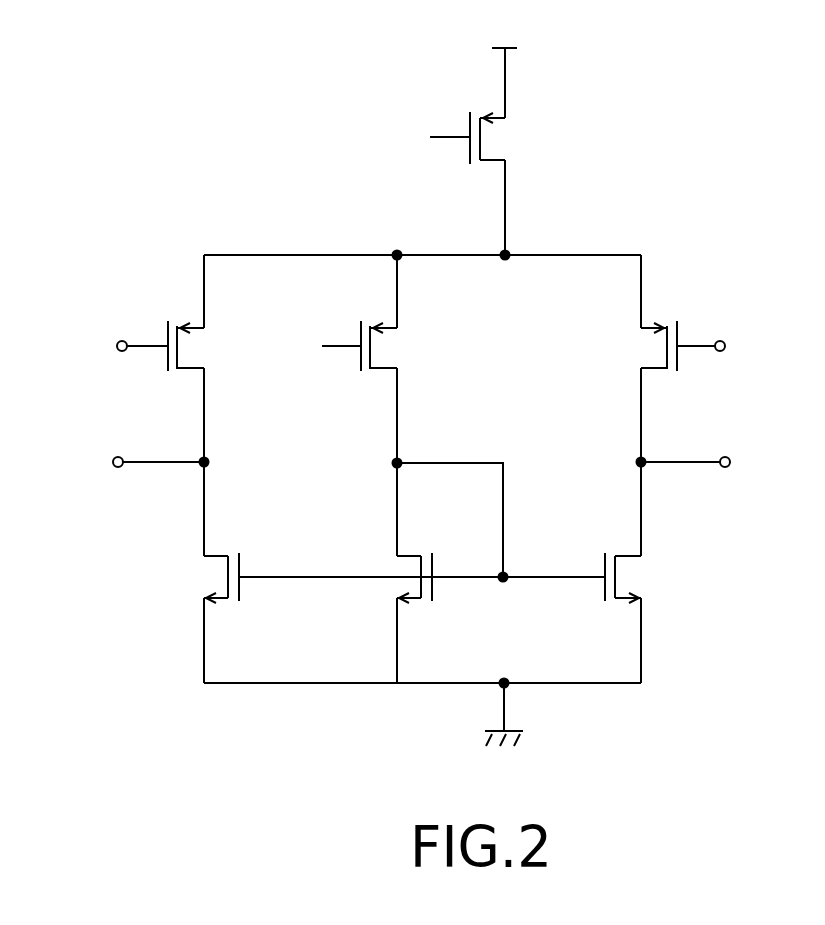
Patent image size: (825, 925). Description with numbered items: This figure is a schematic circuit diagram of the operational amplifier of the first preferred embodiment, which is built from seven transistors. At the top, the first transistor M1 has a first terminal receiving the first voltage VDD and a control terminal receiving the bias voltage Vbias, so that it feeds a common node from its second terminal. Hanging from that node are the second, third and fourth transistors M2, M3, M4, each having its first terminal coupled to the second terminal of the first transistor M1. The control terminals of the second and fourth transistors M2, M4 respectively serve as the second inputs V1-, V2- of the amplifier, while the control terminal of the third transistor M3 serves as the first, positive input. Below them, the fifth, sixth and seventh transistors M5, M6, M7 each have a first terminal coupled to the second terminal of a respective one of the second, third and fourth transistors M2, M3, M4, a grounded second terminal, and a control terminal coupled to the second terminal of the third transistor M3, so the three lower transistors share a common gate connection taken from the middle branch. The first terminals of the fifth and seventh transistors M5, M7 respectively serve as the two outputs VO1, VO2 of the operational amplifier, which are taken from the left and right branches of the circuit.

The first transistor M1 is at (516, 183).
The second transistor M2 is at (210, 346).
The third transistor M3 is at (384, 346).
The fourth transistor M4 is at (636, 346).
The fifth transistor M5 is at (195, 578).
The sixth transistor M6 is at (386, 568).
The seventh transistor M7 is at (650, 578).
The first voltage VDD is at (509, 59).
The bias voltage Vbias is at (411, 128).
The second input V1- is at (112, 346).
The second input V2- is at (738, 346).
The output VO1 is at (127, 462).
The output VO2 is at (721, 464).